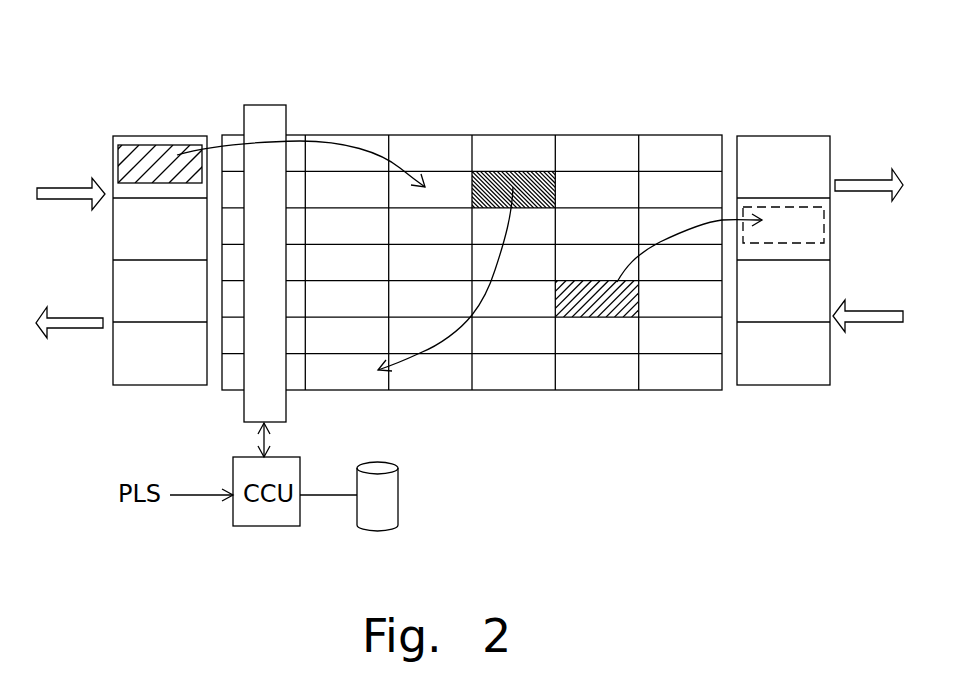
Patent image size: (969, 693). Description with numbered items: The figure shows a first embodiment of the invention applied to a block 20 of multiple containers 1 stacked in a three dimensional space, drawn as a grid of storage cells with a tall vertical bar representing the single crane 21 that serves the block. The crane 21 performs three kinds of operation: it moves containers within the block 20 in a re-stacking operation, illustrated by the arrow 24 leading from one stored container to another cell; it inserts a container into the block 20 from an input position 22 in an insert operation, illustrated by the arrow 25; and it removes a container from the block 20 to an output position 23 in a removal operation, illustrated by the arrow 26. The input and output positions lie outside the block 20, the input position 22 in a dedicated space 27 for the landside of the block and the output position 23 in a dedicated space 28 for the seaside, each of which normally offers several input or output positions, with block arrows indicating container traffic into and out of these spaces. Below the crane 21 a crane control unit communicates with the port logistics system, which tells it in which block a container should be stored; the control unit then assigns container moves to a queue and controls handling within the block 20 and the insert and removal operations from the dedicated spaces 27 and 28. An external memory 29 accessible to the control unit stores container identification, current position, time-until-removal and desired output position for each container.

The container 1 is at (570, 145).
The block 20 is at (605, 50).
The crane 21 is at (260, 115).
The input position 22 is at (145, 150).
The output position 23 is at (819, 236).
The arrow 24 is at (482, 310).
The arrow 25 is at (353, 143).
The arrow 26 is at (683, 230).
The dedicated space 27 is at (160, 282).
The dedicated space 28 is at (783, 281).
The external memory 29 is at (398, 485).